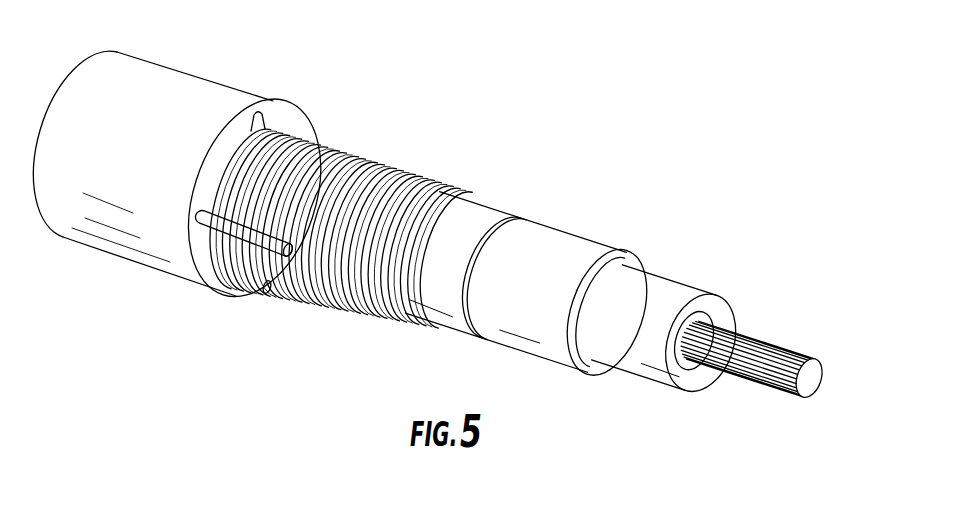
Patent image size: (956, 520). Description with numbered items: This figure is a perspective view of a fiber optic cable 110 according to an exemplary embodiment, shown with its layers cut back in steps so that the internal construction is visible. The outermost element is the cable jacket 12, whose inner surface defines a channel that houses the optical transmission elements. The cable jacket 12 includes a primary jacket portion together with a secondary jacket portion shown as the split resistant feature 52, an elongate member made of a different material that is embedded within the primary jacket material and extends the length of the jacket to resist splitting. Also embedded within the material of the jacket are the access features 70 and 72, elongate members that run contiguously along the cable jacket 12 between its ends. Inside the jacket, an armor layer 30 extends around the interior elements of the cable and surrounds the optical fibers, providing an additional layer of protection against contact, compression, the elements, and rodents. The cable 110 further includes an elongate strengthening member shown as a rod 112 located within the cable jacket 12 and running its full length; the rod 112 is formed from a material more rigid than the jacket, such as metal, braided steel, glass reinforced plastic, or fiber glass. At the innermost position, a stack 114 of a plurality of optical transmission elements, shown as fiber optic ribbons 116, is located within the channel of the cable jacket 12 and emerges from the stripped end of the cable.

The cable jacket 12 is at (165, 82).
The armor layer 30 is at (367, 160).
The split resistant feature 52 is at (262, 124).
The access feature 70 is at (270, 128).
The access feature 72 is at (272, 293).
The cable 110 is at (528, 130).
The rod 112 is at (242, 232).
The stack 114 is at (753, 316).
The fiber optic ribbons 116 is at (805, 362).